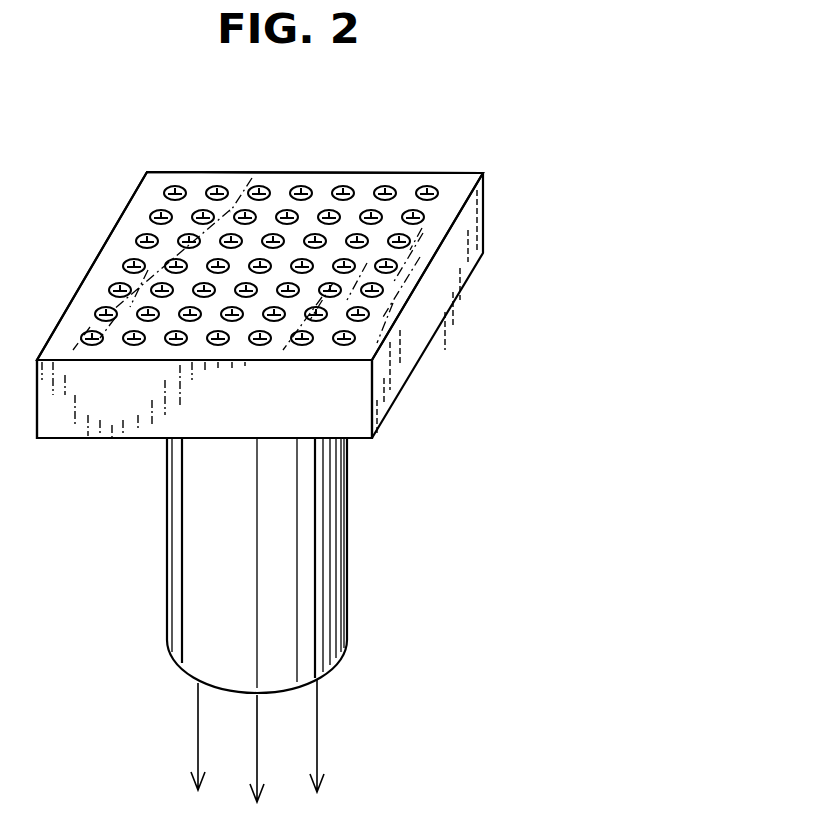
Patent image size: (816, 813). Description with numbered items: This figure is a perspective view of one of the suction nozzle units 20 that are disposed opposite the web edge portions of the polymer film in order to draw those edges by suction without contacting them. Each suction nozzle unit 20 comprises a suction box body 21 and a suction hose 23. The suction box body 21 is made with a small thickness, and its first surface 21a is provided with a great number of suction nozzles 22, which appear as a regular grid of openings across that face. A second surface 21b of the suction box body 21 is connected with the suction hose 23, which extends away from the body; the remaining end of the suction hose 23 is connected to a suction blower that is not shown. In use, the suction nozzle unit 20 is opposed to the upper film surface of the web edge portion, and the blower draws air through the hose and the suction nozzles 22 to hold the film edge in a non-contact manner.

The suction nozzle unit 20 is at (452, 482).
The suction box body 21 is at (403, 388).
The first surface 21a is at (453, 187).
The second surface 21b is at (90, 438).
The suction nozzles 22 is at (303, 188).
The suction hose 23 is at (337, 592).